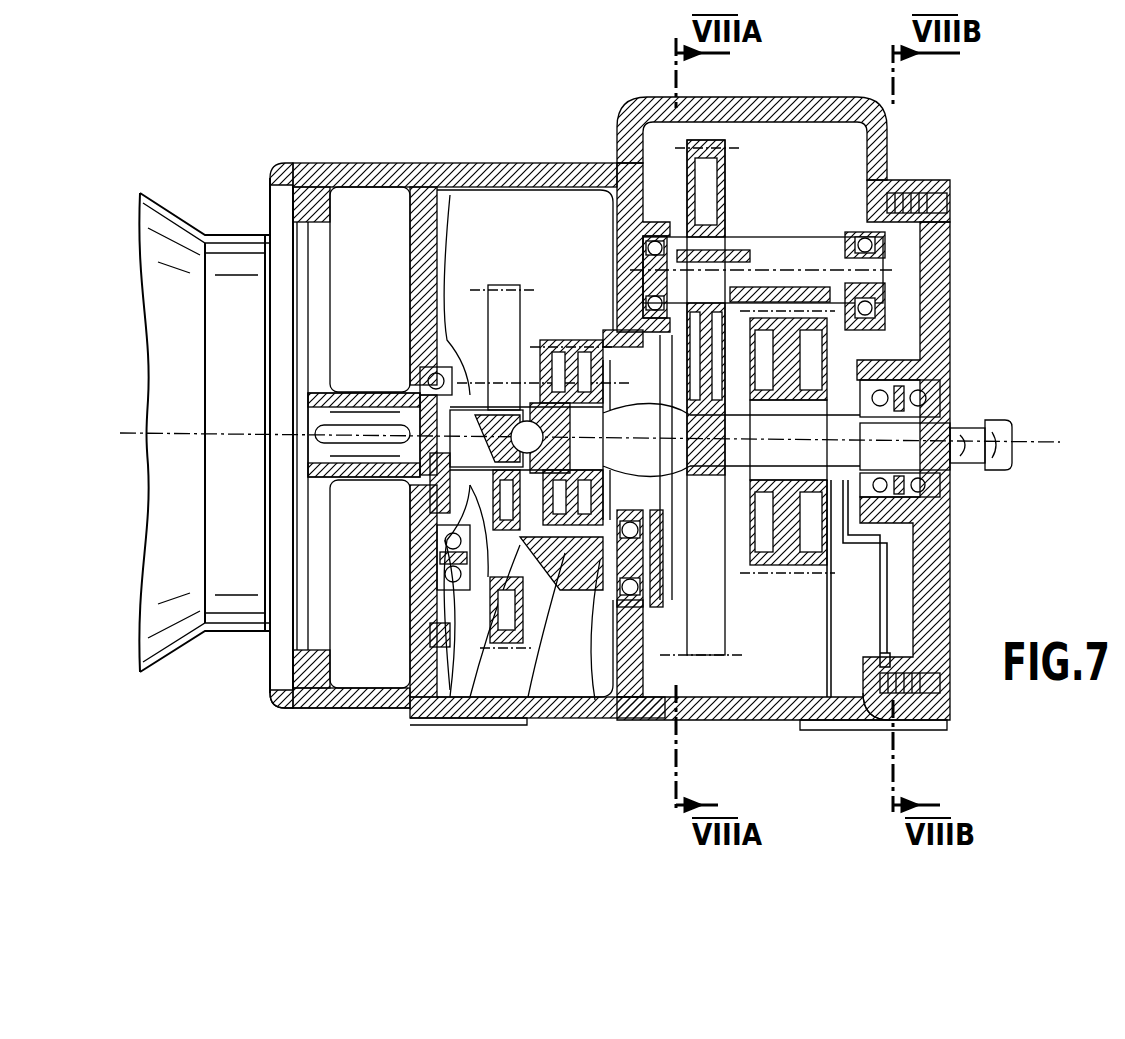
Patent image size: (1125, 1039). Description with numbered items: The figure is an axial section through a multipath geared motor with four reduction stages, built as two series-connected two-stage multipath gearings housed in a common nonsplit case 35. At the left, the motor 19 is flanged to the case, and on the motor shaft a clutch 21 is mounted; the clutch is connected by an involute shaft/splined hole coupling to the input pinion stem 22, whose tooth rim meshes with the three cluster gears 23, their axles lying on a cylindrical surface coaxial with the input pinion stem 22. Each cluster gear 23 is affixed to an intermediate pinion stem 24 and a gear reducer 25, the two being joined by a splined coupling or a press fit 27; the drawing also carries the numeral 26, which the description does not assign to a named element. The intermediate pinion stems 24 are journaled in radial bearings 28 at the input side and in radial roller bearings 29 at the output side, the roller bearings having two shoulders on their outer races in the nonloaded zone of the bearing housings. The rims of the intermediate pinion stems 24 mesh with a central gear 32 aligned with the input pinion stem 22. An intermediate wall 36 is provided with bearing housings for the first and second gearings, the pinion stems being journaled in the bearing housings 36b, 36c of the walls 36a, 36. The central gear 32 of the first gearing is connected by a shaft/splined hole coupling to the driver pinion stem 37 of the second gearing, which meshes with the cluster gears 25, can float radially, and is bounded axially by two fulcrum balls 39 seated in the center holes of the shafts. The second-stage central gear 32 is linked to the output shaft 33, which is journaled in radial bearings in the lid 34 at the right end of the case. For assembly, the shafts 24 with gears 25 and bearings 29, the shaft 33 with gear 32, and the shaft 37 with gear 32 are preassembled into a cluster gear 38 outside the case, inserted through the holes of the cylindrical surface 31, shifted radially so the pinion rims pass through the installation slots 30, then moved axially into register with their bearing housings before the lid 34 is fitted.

The motor 19 is at (233, 235).
The clutch 21 is at (341, 392).
The input pinion stem 22 is at (418, 187).
The cluster gears 23 is at (500, 300).
The intermediate pinion stem 24 is at (650, 240).
The gear reducer 25 is at (730, 170).
The intermediate shaft 26 is at (760, 230).
The press fit 27 is at (897, 177).
The radial bearings 28 is at (612, 240).
The radial roller bearings 29 is at (872, 297).
The radial installation slots 30 is at (858, 548).
The cylindrical surface 31 is at (602, 332).
The central gear 32 is at (812, 362).
The output shaft 33 is at (953, 417).
The lid 34 is at (942, 528).
The common nonsplit case 35 is at (305, 183).
The intermediate wall 36 is at (635, 660).
The wall 36a is at (440, 556).
The bearing housing 36b is at (397, 712).
The bearing housing 36c is at (600, 565).
The driver pinion stem 37 is at (580, 420).
The cluster gear 38 is at (303, 712).
The fulcrum balls 39 is at (530, 395).